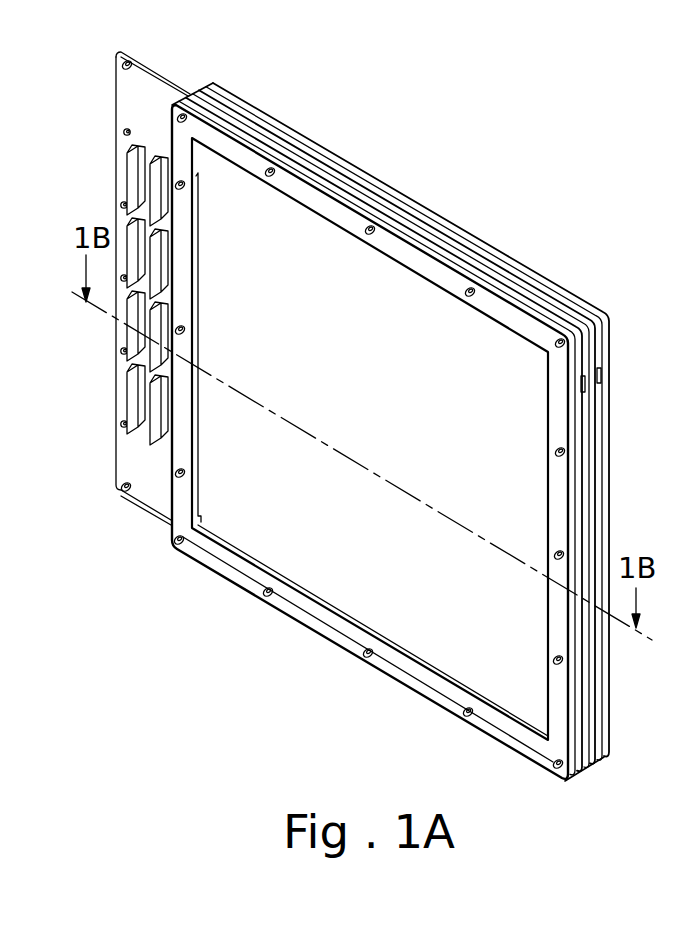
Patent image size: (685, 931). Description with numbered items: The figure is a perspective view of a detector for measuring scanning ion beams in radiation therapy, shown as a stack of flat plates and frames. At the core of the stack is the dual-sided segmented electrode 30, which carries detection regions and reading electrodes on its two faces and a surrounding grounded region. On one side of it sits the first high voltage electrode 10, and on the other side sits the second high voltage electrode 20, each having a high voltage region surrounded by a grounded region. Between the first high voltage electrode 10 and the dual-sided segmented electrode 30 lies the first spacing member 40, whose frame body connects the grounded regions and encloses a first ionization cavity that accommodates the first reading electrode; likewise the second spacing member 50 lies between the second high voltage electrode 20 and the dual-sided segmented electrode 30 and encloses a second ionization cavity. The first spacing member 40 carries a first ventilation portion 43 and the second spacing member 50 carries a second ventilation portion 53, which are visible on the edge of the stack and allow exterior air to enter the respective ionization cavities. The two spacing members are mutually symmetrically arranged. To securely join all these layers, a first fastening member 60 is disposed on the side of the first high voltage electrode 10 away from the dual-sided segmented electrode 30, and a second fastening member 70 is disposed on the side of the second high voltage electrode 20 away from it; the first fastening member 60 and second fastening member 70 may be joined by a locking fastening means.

The first high voltage electrode 10 is at (277, 152).
The second high voltage electrode 20 is at (385, 197).
The dual-sided segmented electrode 30 is at (163, 78).
The first spacing member 40 is at (225, 113).
The first ventilation portion 43 is at (583, 383).
The second spacing member 50 is at (330, 156).
The second ventilation portion 53 is at (598, 375).
The first fastening member 60 is at (227, 570).
The second fastening member 70 is at (447, 227).